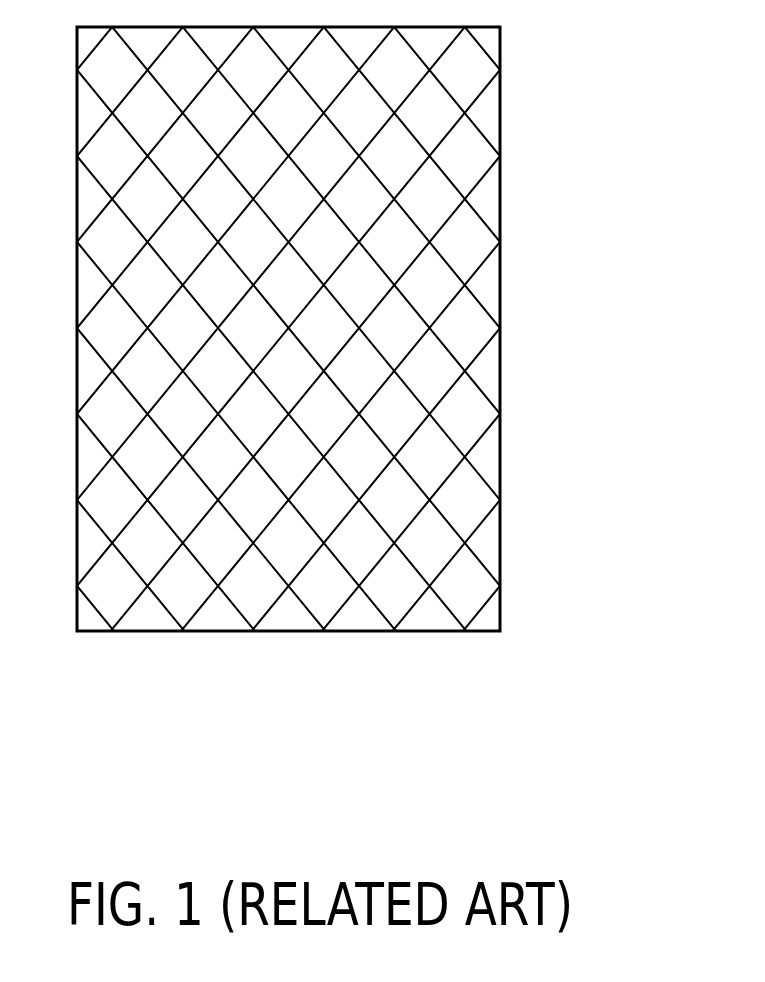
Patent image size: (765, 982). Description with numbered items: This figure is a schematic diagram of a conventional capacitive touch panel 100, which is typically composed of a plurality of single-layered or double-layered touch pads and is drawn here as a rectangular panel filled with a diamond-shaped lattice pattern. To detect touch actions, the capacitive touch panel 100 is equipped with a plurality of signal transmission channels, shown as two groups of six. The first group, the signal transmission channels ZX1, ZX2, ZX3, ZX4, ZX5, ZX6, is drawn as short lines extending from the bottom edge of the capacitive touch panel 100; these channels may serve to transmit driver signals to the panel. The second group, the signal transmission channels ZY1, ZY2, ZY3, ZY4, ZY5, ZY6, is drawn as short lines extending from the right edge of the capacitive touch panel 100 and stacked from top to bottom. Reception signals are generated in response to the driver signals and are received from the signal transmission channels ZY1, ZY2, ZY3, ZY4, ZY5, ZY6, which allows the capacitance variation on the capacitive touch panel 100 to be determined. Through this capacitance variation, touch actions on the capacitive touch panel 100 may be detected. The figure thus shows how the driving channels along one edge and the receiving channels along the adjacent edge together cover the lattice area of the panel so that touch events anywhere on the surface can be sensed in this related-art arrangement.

The capacitive touch panel 100 is at (628, 777).
The signal transmission channel ZY1 is at (500, 113).
The signal transmission channel ZY2 is at (500, 199).
The signal transmission channel ZY3 is at (500, 285).
The signal transmission channel ZY4 is at (500, 371).
The signal transmission channel ZY5 is at (500, 457).
The signal transmission channel ZY6 is at (500, 543).
The signal transmission channel ZX1 is at (112, 631).
The signal transmission channel ZX2 is at (182, 631).
The signal transmission channel ZX3 is at (253, 631).
The signal transmission channel ZX4 is at (324, 631).
The signal transmission channel ZX5 is at (394, 631).
The signal transmission channel ZX6 is at (464, 631).